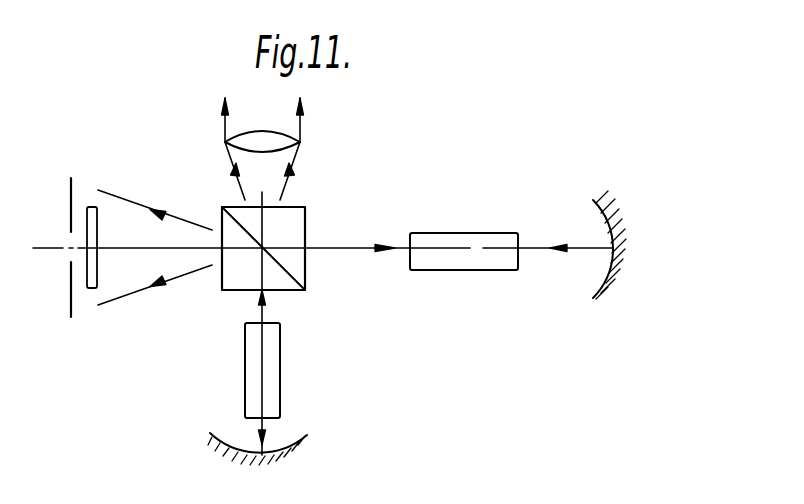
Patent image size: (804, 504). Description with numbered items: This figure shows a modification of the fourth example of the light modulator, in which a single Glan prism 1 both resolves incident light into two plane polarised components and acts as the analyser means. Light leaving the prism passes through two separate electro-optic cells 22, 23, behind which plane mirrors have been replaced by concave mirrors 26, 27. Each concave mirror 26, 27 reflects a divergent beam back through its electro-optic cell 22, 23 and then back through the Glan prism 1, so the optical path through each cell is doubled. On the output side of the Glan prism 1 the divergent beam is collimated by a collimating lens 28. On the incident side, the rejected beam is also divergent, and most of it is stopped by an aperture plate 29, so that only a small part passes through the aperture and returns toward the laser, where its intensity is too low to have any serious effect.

The Glan prism 1 is at (292, 218).
The electro-optic cell 22 is at (480, 238).
The electro-optic cell 23 is at (270, 353).
The concave mirror 26 is at (610, 216).
The concave mirror 27 is at (297, 443).
The collimating lens 28 is at (283, 145).
The aperture plate 29 is at (71, 184).